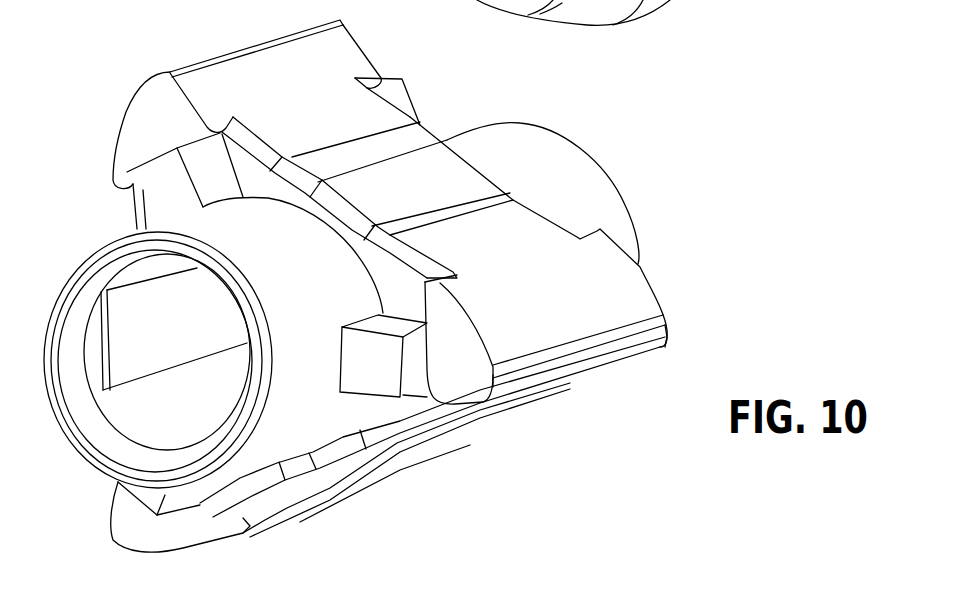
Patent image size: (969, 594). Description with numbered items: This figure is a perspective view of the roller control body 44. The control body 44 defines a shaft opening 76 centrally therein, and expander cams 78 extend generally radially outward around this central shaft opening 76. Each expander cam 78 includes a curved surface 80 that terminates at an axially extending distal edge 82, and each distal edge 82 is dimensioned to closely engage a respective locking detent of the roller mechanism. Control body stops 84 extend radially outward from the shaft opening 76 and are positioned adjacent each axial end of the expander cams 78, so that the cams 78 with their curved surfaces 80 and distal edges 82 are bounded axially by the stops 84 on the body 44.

The control body 44 is at (568, 173).
The shaft opening 76 is at (138, 345).
The expander cam 78 is at (233, 87).
The curved surface 80 is at (623, 315).
The distal edge 82 is at (535, 377).
The control body stop 84 is at (395, 97).